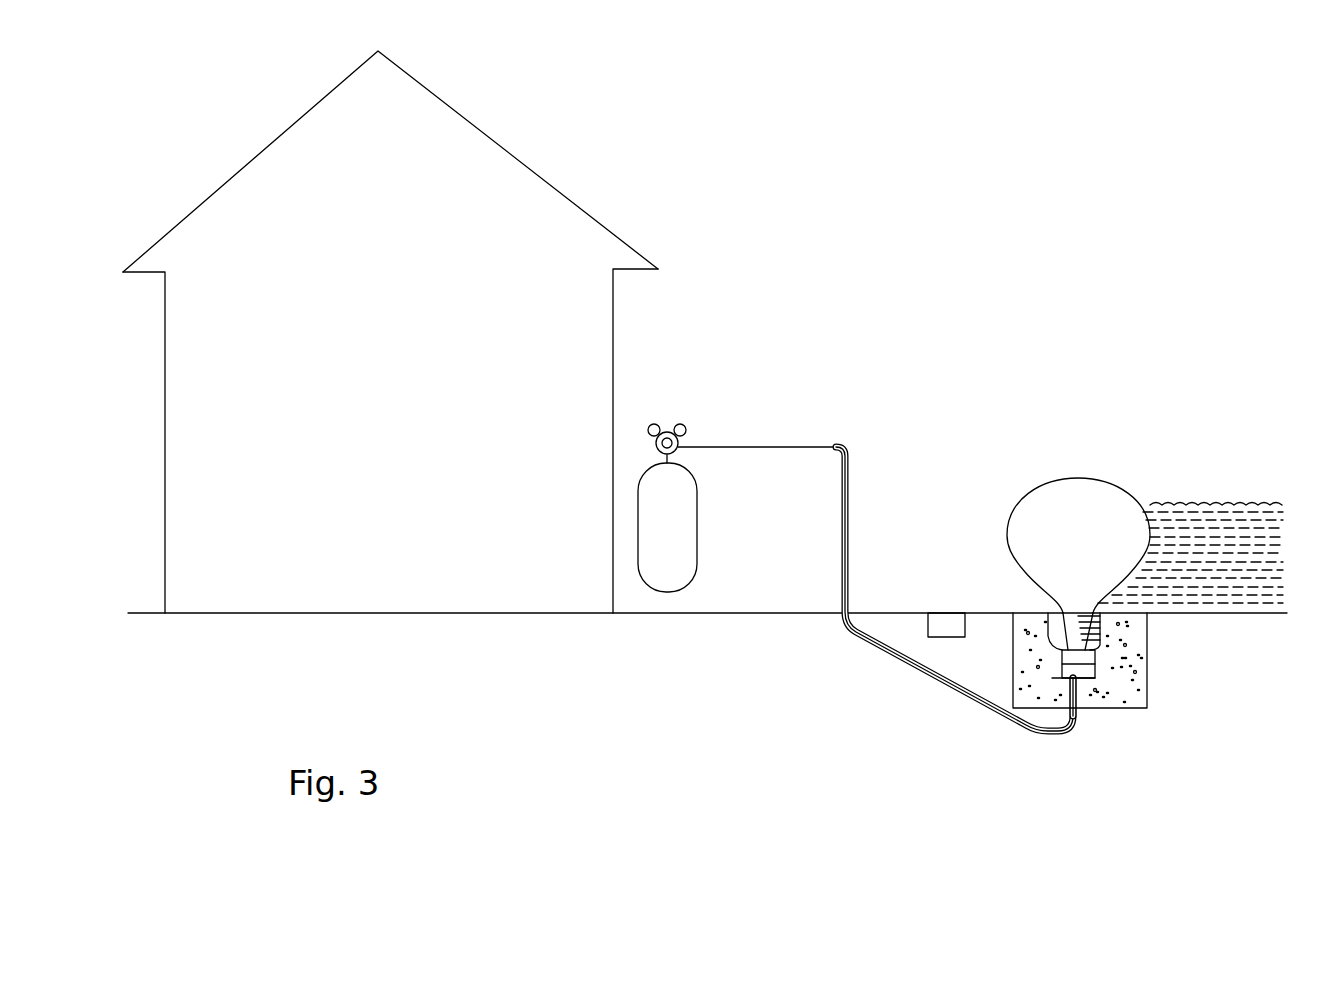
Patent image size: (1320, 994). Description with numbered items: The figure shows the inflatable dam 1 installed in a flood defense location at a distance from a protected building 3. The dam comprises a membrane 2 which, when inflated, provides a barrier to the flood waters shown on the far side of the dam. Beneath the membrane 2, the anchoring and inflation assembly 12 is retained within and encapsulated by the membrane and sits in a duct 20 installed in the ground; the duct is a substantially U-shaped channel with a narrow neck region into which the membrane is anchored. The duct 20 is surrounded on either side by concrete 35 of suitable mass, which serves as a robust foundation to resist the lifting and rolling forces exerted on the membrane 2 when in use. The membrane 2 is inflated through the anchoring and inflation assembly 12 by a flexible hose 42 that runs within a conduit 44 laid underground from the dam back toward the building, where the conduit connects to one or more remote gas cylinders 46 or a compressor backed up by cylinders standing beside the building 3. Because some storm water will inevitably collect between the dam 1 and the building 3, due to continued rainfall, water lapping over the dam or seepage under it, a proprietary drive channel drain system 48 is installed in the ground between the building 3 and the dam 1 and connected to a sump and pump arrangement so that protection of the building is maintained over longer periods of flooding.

The inflatable dam 1 is at (1061, 521).
The membrane 2 is at (1096, 486).
The building 3 is at (594, 244).
The anchoring and inflation assembly 12 is at (1093, 665).
The duct 20 is at (1098, 640).
The concrete 35 is at (1143, 690).
The flexible hose 42 is at (1068, 722).
The conduit 44 is at (1003, 720).
The gas cylinders 46 is at (690, 490).
The drive channel drain system 48 is at (945, 620).